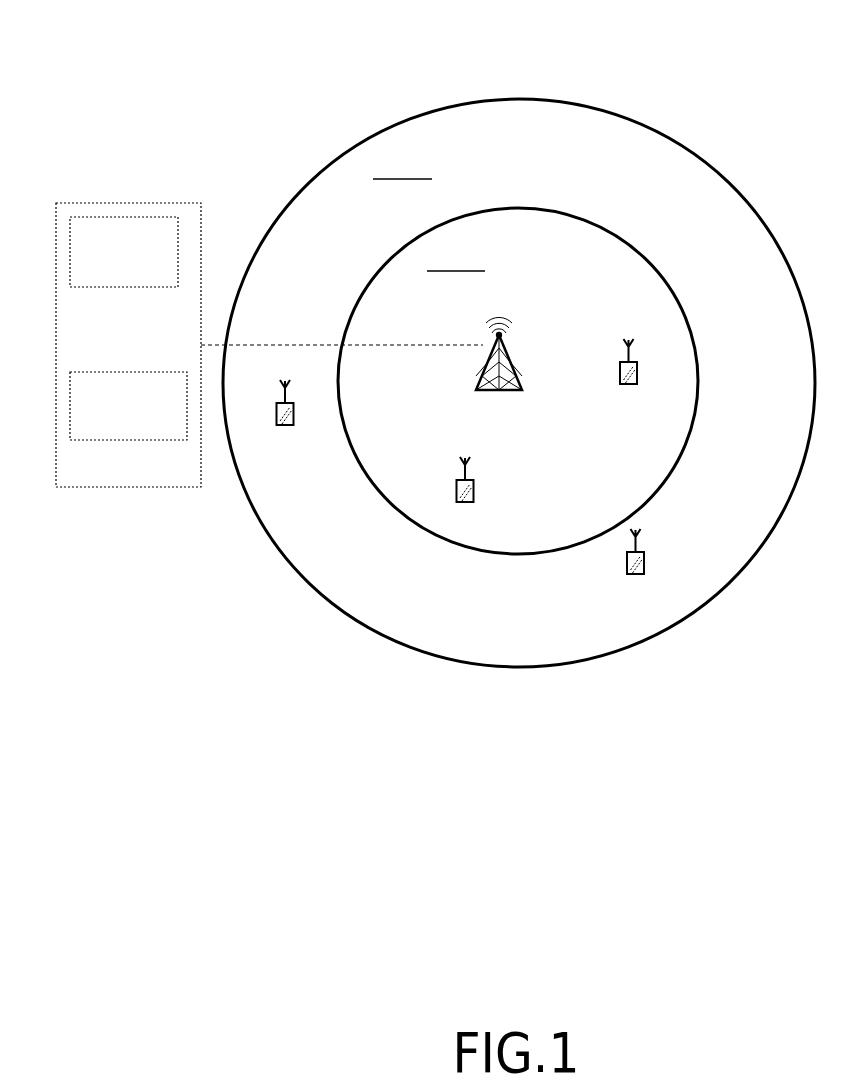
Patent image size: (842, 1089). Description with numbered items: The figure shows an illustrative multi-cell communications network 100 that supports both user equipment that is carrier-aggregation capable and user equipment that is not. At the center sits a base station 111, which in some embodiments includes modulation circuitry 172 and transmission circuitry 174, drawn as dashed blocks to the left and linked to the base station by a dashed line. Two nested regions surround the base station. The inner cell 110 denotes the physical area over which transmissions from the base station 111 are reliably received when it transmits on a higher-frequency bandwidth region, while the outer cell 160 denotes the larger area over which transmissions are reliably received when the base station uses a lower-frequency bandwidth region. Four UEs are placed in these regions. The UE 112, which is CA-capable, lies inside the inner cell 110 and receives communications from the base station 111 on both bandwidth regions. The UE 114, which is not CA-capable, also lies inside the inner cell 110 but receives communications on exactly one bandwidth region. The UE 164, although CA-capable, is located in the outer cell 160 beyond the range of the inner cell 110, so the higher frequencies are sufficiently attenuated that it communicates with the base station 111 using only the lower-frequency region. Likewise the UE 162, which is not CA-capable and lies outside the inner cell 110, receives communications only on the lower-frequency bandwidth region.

The multi-cell communications network 100 is at (271, 31).
The cell 1 110 is at (637, 250).
The base station 111 is at (506, 392).
The UE 112 is at (620, 372).
The UE 114 is at (467, 505).
The cell 2 160 is at (665, 134).
The UE 162 is at (288, 428).
The UE 164 is at (646, 560).
The modulation circuitry 172 is at (122, 287).
The transmission circuitry 174 is at (127, 372).